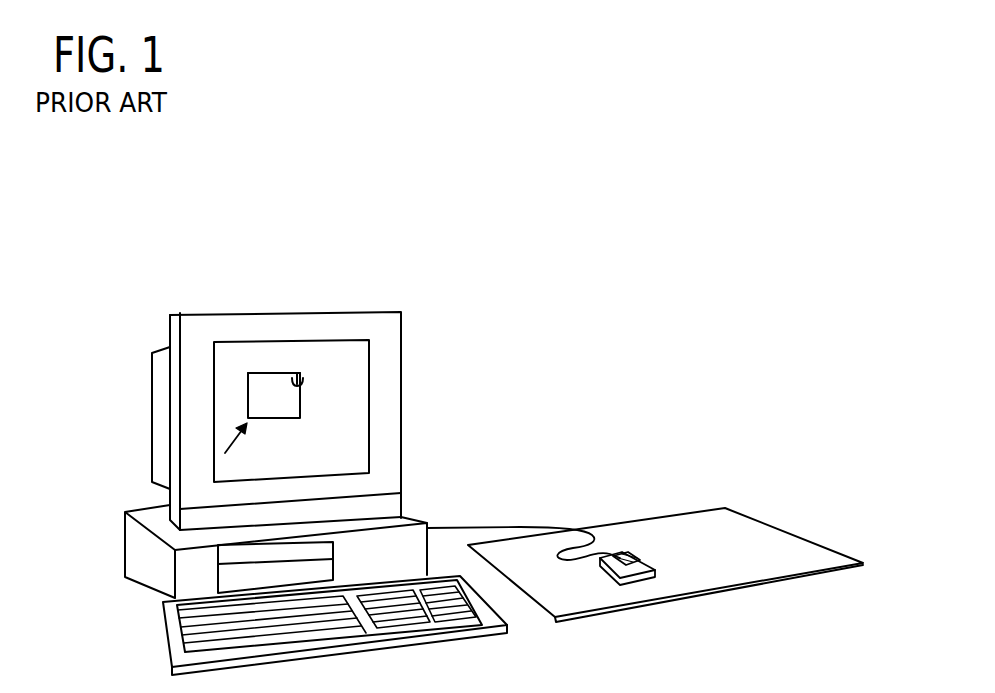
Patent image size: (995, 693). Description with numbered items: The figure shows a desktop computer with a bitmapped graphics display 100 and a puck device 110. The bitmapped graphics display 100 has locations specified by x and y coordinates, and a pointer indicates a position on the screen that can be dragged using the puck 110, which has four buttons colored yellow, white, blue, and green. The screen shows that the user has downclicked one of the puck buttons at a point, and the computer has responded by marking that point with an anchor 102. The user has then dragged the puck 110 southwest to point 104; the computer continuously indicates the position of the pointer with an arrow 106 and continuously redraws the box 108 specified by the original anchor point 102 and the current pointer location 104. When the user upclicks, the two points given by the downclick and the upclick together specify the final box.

The bitmapped graphics display 100 is at (345, 427).
The anchor 102 is at (300, 374).
The point 104 is at (249, 418).
The arrow 106 is at (225, 453).
The box 108 is at (274, 372).
The puck device 110 is at (640, 563).